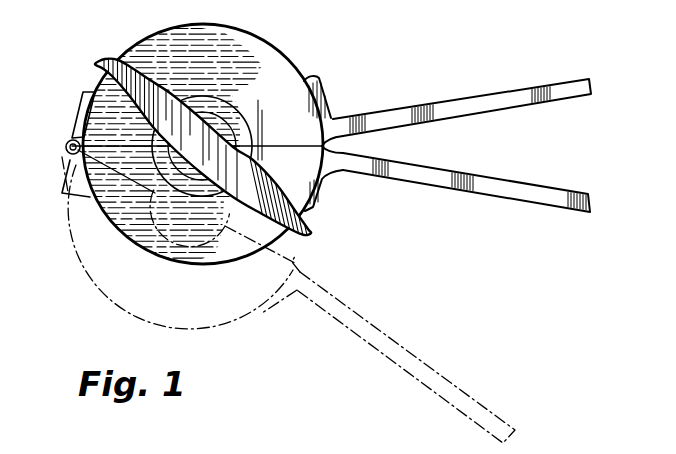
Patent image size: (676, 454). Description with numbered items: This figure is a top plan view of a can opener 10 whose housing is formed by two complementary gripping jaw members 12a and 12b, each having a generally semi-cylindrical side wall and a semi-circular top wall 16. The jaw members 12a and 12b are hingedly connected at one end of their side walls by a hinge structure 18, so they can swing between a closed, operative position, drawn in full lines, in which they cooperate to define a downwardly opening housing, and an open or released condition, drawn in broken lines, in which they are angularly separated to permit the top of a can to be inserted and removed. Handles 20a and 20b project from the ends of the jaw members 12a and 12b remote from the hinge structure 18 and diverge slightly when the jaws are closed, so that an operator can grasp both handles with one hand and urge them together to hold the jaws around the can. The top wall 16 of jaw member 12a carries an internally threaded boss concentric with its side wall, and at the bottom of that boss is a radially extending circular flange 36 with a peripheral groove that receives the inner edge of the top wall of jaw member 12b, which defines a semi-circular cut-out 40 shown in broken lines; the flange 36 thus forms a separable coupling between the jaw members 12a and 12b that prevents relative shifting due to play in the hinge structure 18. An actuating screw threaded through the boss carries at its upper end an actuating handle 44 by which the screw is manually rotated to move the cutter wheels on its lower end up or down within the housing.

The can opener 10 is at (364, 62).
The gripping jaw member 12a is at (335, 41).
The gripping jaw member 12b is at (286, 238).
The top wall 16 is at (107, 93).
The hinge structure 18 is at (64, 148).
The handle 20a is at (487, 80).
The handle 20b is at (510, 224).
The circular flange 36 is at (236, 114).
The semi-circular cut-out 40 is at (153, 198).
The actuating handle 44 is at (133, 56).